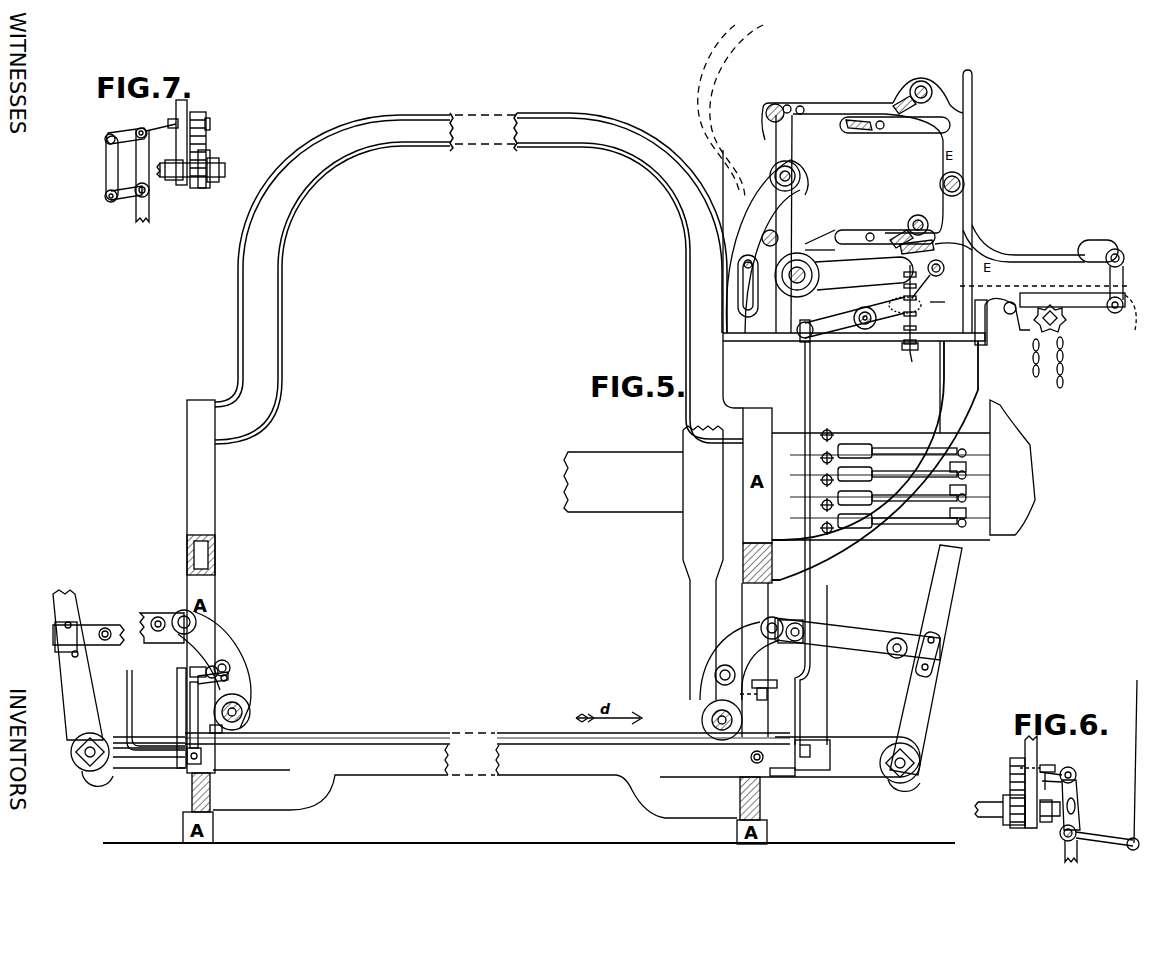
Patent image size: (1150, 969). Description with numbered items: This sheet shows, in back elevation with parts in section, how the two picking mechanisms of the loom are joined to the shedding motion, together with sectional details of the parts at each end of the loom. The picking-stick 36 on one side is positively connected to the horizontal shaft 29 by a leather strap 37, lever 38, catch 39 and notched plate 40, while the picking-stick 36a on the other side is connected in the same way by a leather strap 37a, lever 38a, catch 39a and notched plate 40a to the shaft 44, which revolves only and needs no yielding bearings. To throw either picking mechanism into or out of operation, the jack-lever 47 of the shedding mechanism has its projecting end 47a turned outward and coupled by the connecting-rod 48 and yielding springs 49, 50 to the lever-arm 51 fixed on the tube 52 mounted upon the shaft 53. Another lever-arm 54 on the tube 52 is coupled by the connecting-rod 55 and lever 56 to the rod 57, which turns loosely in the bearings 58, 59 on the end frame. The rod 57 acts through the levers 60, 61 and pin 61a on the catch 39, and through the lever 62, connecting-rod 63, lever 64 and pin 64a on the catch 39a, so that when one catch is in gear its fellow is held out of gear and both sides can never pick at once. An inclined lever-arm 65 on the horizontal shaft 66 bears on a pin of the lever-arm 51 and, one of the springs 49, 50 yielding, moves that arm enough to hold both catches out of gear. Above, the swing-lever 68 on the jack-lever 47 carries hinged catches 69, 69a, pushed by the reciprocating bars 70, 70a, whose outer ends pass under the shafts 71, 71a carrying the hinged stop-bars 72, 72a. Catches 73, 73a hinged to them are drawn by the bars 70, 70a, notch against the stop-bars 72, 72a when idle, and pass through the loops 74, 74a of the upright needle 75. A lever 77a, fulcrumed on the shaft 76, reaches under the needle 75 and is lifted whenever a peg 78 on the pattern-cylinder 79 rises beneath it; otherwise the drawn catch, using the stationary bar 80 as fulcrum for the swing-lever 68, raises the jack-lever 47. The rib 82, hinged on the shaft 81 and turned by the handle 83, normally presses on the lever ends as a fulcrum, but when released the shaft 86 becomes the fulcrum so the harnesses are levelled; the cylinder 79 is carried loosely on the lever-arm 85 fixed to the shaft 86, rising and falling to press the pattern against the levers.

In FIG. 5, the horizontal shaft 29 is at (516, 777).
In FIG. 6, the horizontal shaft 29 is at (1011, 818).
In FIG. 5, the picking-stick 36 is at (921, 668).
In FIG. 5, the picking-stick 36a is at (83, 688).
In FIG. 5, the leather strap 37 is at (858, 648).
In FIG. 5, the leather strap 37a is at (122, 640).
In FIG. 5, the lever 38 is at (755, 645).
In FIG. 6, the lever 38 is at (1033, 744).
In FIG. 5, the lever 38a is at (244, 700).
In FIG. 7, the lever 38a is at (178, 152).
In FIG. 5, the catch 39 is at (725, 664).
In FIG. 6, the catch 39 is at (1012, 760).
In FIG. 5, the catch 39a is at (208, 670).
In FIG. 7, the catch 39a is at (207, 120).
In FIG. 5, the notched plate 40 is at (727, 718).
In FIG. 6, the notched plate 40 is at (1015, 826).
In FIG. 5, the notched plate 40a is at (220, 733).
In FIG. 7, the notched plate 40a is at (200, 188).
In FIG. 5, the shaft 44 is at (251, 712).
In FIG. 7, the shaft 44 is at (201, 170).
In FIG. 5, the jack-lever 47 is at (765, 241).
In FIG. 5, the projecting end of jack-lever 47a is at (844, 275).
In FIG. 5, the connecting-rod 48 is at (914, 358).
In FIG. 5, the yielding spring 49 is at (903, 349).
In FIG. 5, the yielding spring 50 is at (906, 293).
In FIG. 5, the lever-arm 51 is at (901, 313).
In FIG. 5, the tube 52 is at (864, 330).
In FIG. 5, the shaft 53 is at (860, 312).
In FIG. 5, the lever-arm 54 is at (812, 338).
In FIG. 5, the connecting-rod 55 is at (810, 555).
In FIG. 6, the connecting-rod 55 is at (1127, 765).
In FIG. 5, the lever 56 is at (780, 776).
In FIG. 6, the lever 56 is at (1104, 837).
In FIG. 5, the shaft or rod 57 is at (325, 733).
In FIG. 6, the shaft or rod 57 is at (1063, 839).
In FIG. 7, the shaft or rod 57 is at (150, 191).
In FIG. 5, the bearing 58 is at (757, 798).
In FIG. 6, the bearing 58 is at (1079, 852).
In FIG. 5, the bearing 59 is at (178, 696).
In FIG. 7, the bearing 59 is at (140, 222).
In FIG. 5, the lever 60 is at (754, 760).
In FIG. 6, the lever 60 is at (1078, 818).
In FIG. 5, the lever 61 is at (770, 693).
In FIG. 6, the lever 61 is at (1076, 776).
In FIG. 5, the pin 61a is at (760, 680).
In FIG. 6, the pin 61a is at (1056, 767).
In FIG. 5, the lever 62 is at (201, 762).
In FIG. 7, the lever 62 is at (115, 200).
In FIG. 5, the connecting-rod 63 is at (190, 720).
In FIG. 7, the connecting-rod 63 is at (104, 168).
In FIG. 5, the lever 64 is at (230, 677).
In FIG. 7, the lever 64 is at (130, 131).
In FIG. 5, the pin 64a is at (226, 660).
In FIG. 7, the pin 64a is at (172, 120).
In FIG. 5, the inclined lever-arm 65 is at (945, 300).
In FIG. 5, the horizontal shaft 66 is at (928, 275).
In FIG. 5, the swing-lever 68 is at (785, 183).
In FIG. 5, the catch 69 is at (905, 125).
In FIG. 5, the catch 69a is at (845, 238).
In FIG. 5, the reciprocating bar 70 is at (862, 130).
In FIG. 5, the reciprocating bar 70a is at (936, 244).
In FIG. 5, the shaft 71 is at (928, 89).
In FIG. 5, the shaft 71a is at (921, 218).
In FIG. 5, the stop-bar 72 is at (898, 104).
In FIG. 5, the stop-bar 72a is at (898, 232).
In FIG. 5, the catch 73 is at (815, 114).
In FIG. 5, the catch 73a is at (860, 238).
In FIG. 5, the hole or loop 74 is at (974, 140).
In FIG. 5, the hole or loop 74a is at (985, 255).
In FIG. 5, the upright rod or needle 75 is at (965, 178).
In FIG. 5, the shaft 76 is at (1114, 315).
In FIG. 5, the lever 77a is at (1045, 297).
In FIG. 5, the peg or pin 78 is at (1064, 319).
In FIG. 5, the pattern-cylinder 79 is at (1048, 362).
In FIG. 5, the stationary bar 80 is at (777, 104).
In FIG. 5, the shaft 81 is at (1124, 259).
In FIG. 5, the rib 82 is at (1124, 280).
In FIG. 5, the handle 83 is at (1098, 243).
In FIG. 5, the lever-arm 85 is at (1016, 325).
In FIG. 5, the shaft 86 is at (1010, 301).